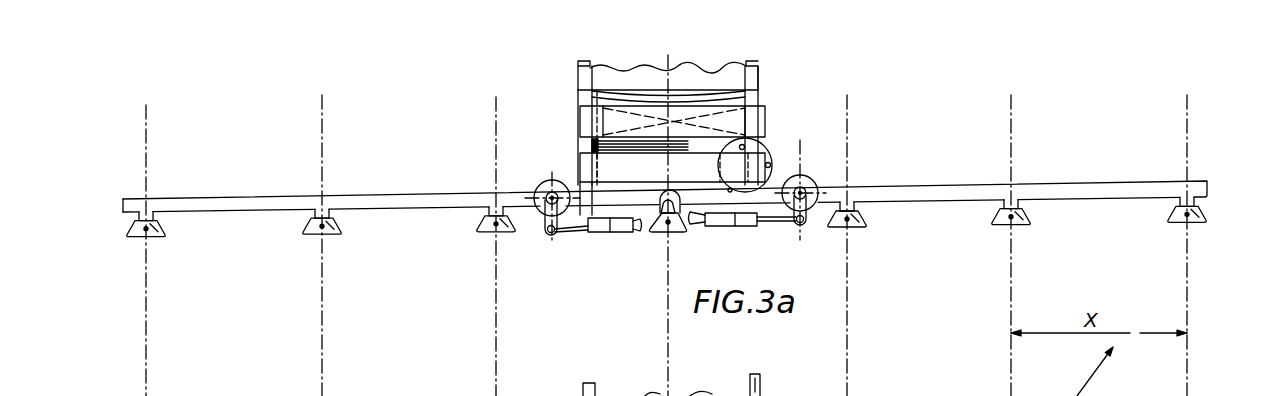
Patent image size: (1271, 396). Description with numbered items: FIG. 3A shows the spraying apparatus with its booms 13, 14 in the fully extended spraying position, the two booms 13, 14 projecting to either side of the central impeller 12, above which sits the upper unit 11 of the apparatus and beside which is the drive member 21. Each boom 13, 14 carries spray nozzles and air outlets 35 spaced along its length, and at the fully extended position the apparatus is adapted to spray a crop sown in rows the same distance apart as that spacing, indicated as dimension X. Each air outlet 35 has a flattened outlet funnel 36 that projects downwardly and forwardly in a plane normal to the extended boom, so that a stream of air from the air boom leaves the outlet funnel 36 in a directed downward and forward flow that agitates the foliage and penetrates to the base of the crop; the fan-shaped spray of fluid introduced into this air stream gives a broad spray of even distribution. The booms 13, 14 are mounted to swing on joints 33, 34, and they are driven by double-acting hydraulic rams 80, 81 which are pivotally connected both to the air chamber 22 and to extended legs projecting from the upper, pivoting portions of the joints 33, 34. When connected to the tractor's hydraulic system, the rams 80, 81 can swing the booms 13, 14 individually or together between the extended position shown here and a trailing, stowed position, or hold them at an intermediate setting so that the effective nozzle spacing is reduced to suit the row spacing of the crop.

The upper platform / frame 11 is at (610, 80).
The central impeller 12 is at (623, 170).
The boom 13 is at (198, 198).
The boom 14 is at (927, 190).
The drive wheel / pulley 21 is at (756, 149).
The air chamber 22 is at (645, 198).
The joint 33 is at (538, 222).
The joint 34 is at (814, 216).
The air outlet 35 is at (316, 215).
The outlet funnel 36 is at (472, 233).
The double-acting hydraulic ram 80 is at (610, 223).
The double-acting hydraulic ram 81 is at (742, 227).